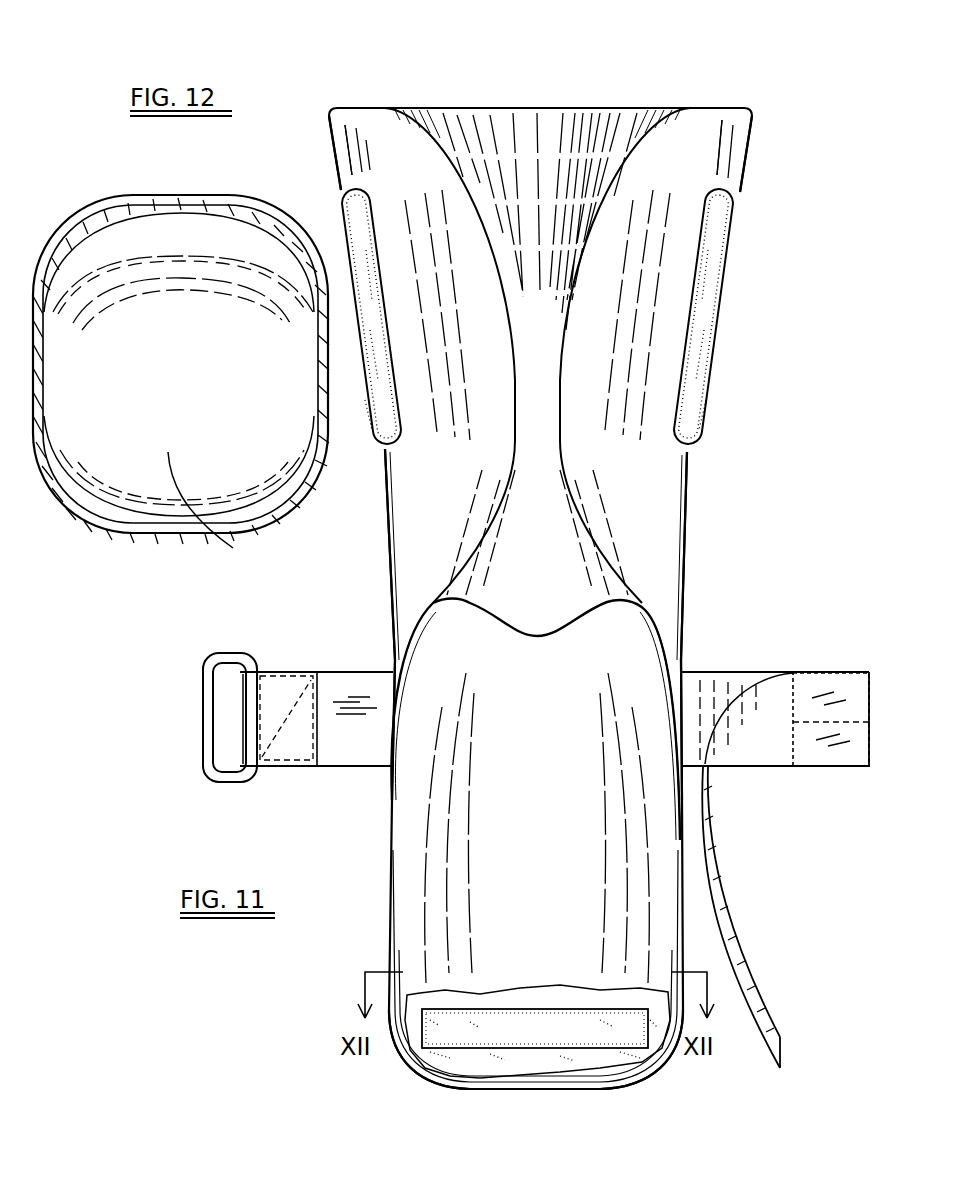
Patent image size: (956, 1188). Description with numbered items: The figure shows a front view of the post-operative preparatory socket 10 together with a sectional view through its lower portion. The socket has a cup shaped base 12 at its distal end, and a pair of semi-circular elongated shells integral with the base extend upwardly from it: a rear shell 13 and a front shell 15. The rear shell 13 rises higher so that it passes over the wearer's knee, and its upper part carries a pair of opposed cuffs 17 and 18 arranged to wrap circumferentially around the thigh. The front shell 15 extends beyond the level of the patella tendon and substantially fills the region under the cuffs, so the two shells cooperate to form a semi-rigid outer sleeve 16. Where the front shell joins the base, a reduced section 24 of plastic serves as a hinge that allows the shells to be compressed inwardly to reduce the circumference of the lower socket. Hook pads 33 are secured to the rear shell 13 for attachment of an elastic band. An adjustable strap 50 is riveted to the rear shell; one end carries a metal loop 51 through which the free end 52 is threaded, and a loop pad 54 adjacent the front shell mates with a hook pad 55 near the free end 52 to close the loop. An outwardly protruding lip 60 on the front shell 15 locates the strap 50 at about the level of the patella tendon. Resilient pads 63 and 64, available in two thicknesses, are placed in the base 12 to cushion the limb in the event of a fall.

In FIG. 11, the post-operative preparatory socket 10 is at (704, 458).
In FIG. 11, the cup shaped base 12 is at (655, 1083).
In FIG. 12, the rear shell 13 is at (228, 195).
In FIG. 11, the rear shell 13 is at (561, 100).
In FIG. 12, the front shell 15 is at (111, 536).
In FIG. 11, the front shell 15 is at (662, 636).
In FIG. 12, the semi-rigid outer sleeve 16 is at (76, 222).
In FIG. 11, the semi-rigid outer sleeve 16 is at (706, 517).
In FIG. 11, the cuff 17 is at (706, 156).
In FIG. 11, the cuff 18 is at (360, 135).
In FIG. 12, the reduced section 24 is at (234, 548).
In FIG. 11, the hook pads 33 is at (355, 225).
In FIG. 11, the adjustable strap 50 is at (788, 656).
In FIG. 11, the metal loop 51 is at (205, 733).
In FIG. 11, the free end 52 is at (780, 1042).
In FIG. 11, the loop pad 54 is at (851, 768).
In FIG. 11, the hook pad 55 is at (725, 890).
In FIG. 11, the outwardly protruding lip 60 is at (440, 627).
In FIG. 11, the resilient pad 63 is at (470, 1062).
In FIG. 11, the resilient pad 64 is at (432, 1018).